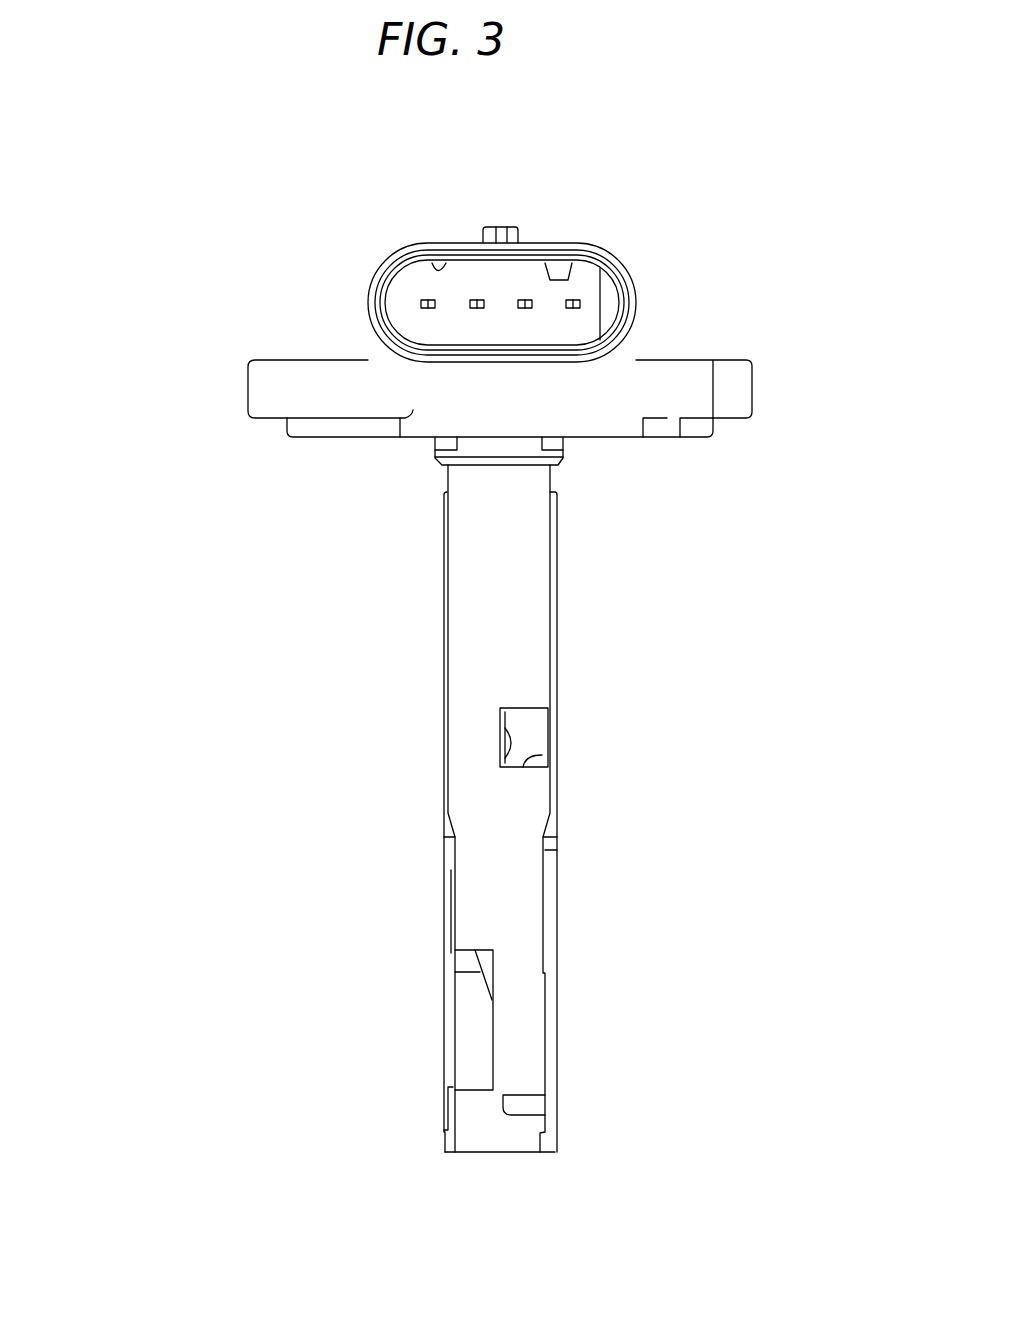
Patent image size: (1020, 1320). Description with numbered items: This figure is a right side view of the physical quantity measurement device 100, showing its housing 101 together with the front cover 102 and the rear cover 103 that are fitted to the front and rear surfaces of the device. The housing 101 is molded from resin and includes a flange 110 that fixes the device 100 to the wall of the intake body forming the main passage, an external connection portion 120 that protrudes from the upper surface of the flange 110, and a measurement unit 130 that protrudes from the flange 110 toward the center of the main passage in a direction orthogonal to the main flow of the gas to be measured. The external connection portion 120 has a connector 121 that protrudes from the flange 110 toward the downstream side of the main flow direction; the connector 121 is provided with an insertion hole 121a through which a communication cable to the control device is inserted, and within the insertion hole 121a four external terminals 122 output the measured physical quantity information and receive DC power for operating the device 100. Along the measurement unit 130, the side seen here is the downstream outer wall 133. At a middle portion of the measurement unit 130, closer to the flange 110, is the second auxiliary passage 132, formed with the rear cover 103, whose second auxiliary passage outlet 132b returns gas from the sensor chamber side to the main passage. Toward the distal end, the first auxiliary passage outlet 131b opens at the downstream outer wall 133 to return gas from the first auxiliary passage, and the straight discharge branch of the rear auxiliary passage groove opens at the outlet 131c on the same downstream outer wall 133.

The physical quantity measurement device 100 is at (720, 147).
The housing 101 is at (128, 277).
The front cover 102 is at (445, 637).
The rear cover 103 is at (557, 590).
The flange 110 is at (249, 392).
The external connection portion 120 is at (369, 322).
The connector 121 is at (587, 278).
The insertion hole 121a is at (434, 263).
The external terminals 122 is at (479, 298).
The measurement unit 130 is at (444, 503).
The first auxiliary passage outlet 131b is at (472, 1033).
The outlet 131c is at (527, 1105).
The second auxiliary passage 132 is at (521, 735).
The second auxiliary passage outlet 132b is at (542, 758).
The downstream outer wall 133 is at (487, 565).